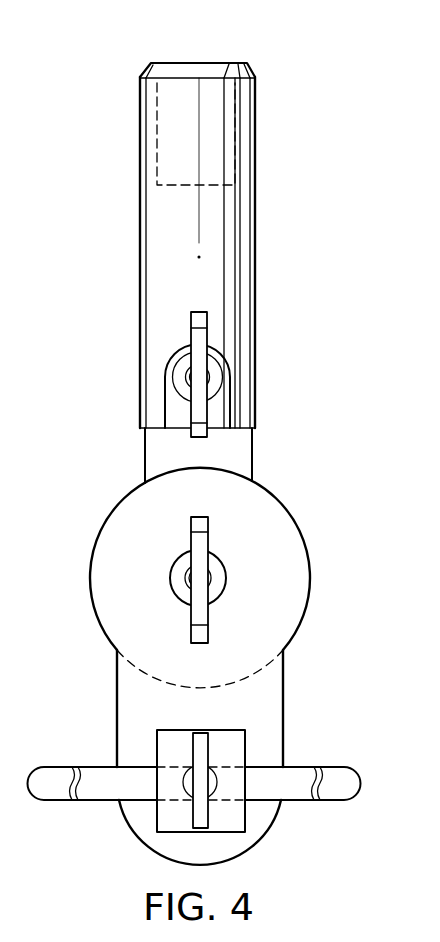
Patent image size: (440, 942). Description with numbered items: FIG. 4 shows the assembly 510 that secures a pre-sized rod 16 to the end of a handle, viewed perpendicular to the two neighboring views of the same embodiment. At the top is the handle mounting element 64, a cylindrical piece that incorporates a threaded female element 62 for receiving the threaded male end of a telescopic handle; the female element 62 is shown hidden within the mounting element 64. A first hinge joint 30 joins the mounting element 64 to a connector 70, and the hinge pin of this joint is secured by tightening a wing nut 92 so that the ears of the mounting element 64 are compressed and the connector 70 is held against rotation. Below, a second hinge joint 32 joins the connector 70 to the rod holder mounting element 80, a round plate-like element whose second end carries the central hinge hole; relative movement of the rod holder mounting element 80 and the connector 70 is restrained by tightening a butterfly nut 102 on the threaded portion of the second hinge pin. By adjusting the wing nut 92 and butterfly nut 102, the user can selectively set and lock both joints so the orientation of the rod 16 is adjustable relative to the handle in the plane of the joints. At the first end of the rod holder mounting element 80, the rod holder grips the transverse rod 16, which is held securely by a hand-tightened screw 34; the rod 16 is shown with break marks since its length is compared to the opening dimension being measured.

The rod securing assembly 510 is at (116, 78).
The threaded female element 62 is at (228, 96).
The handle mounting element 64 is at (255, 180).
The first hinge joint 30 is at (120, 343).
The wing nut 92 is at (203, 338).
The connector 70 is at (252, 445).
The second hinge joint 32 is at (88, 498).
The rod holder mounting element 80 is at (285, 502).
The butterfly nut 102 is at (197, 545).
The pre-sized rod 16 is at (340, 775).
The screw 34 is at (203, 815).